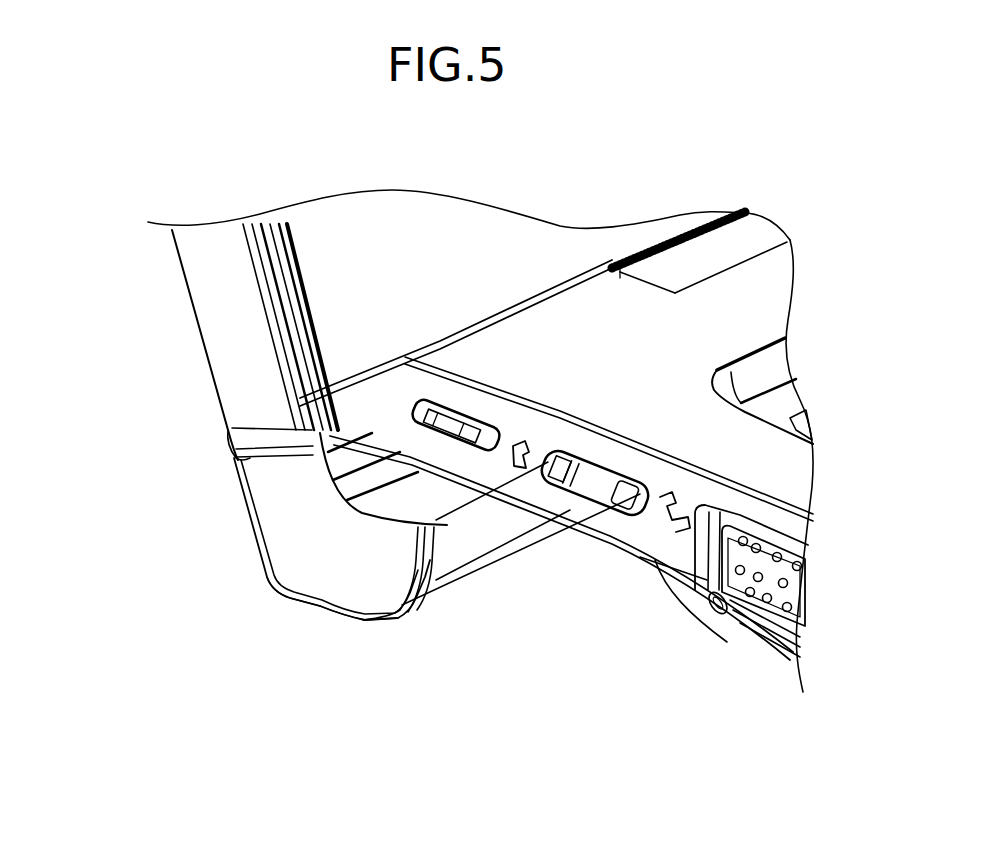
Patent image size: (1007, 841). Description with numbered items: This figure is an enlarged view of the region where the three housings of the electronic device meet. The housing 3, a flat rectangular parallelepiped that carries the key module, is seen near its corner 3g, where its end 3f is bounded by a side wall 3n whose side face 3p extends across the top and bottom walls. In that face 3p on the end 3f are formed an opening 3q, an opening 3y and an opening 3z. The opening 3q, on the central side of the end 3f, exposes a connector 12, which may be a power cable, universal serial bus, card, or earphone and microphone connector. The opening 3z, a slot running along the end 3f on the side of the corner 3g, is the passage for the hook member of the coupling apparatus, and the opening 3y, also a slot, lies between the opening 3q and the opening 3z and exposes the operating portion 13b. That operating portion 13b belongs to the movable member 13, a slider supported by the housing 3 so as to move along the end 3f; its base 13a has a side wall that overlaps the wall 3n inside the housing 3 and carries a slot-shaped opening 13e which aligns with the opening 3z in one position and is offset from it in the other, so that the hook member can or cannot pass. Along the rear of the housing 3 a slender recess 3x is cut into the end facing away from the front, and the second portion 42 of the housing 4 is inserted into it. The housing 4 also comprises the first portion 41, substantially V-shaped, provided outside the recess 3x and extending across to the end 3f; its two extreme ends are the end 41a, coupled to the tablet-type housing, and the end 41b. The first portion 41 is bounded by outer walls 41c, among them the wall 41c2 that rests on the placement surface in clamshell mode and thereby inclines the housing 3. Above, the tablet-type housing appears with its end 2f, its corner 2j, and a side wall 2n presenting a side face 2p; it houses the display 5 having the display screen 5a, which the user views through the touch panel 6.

The display screen 5a is at (469, 298).
The display 5 is at (469, 298).
The touch panel 6 is at (441, 197).
The recess 3x is at (663, 272).
The second portion 42 is at (728, 240).
The end 2f is at (191, 327).
The wall 2n is at (191, 327).
The face 2p is at (207, 297).
The corner 3g is at (420, 356).
The opening 13e is at (466, 425).
The end 41a is at (284, 450).
The corner 2j is at (232, 447).
The first portion 41 is at (272, 550).
The housing 4 is at (315, 605).
The wall 41c2 is at (385, 654).
The wall 41c is at (367, 622).
The base 13a is at (465, 437).
The movable member 13 is at (595, 483).
The end 41b is at (485, 548).
The opening 3z is at (472, 452).
The opening 3y is at (590, 486).
The operating portion 13b is at (622, 495).
The end 3f is at (561, 555).
The wall 3n is at (561, 555).
The face 3p is at (660, 548).
The opening 3q is at (720, 615).
The connector 12 is at (758, 597).
The housing 3 is at (785, 667).